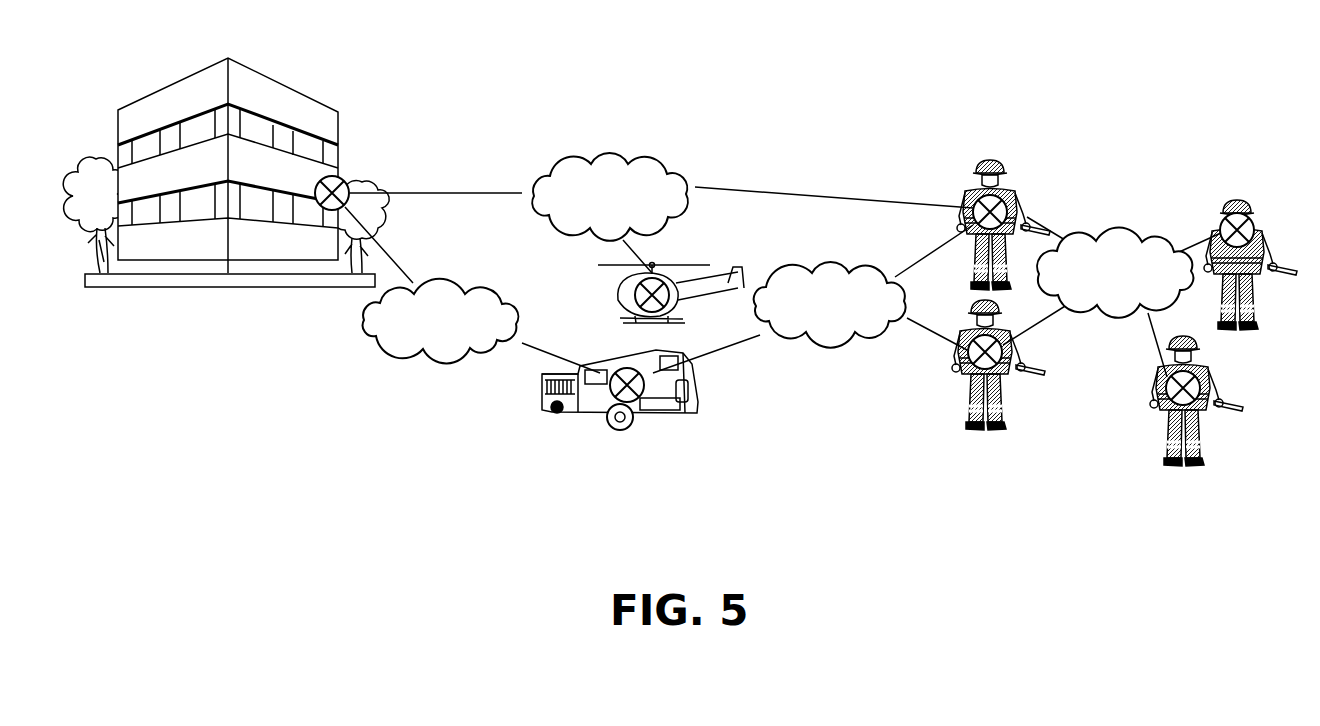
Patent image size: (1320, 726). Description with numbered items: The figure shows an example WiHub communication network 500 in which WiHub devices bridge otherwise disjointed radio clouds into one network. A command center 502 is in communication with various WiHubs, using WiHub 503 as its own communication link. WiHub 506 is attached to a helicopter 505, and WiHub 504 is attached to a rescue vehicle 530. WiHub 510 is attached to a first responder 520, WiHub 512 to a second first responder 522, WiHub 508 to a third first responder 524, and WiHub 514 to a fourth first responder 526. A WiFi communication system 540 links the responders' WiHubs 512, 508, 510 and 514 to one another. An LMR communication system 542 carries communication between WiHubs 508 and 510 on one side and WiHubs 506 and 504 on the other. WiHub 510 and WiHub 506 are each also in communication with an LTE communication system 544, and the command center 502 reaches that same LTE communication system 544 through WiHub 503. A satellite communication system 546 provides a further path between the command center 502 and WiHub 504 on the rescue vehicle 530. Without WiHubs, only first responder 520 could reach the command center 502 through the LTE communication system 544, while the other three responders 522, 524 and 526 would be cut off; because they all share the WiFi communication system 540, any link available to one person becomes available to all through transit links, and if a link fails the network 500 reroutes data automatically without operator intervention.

The WiHub communication network 500 is at (1205, 108).
The command center 502 is at (273, 105).
The WiHub 503 is at (350, 185).
The WiHub 504 is at (645, 390).
The helicopter 505 is at (617, 308).
The WiHub 506 is at (673, 293).
The WiHub 508 is at (1010, 350).
The WiHub 510 is at (1025, 208).
The WiHub 512 is at (1250, 225).
The WiHub 514 is at (1163, 388).
The first responder 520 is at (973, 237).
The second first responder 522 is at (1265, 303).
The third first responder 524 is at (968, 400).
The fourth first responder 526 is at (1207, 423).
The rescue vehicle 530 is at (593, 412).
The WiFi communication system 540 is at (1085, 317).
The LMR communication system 542 is at (798, 343).
The LTE communication system 544 is at (570, 190).
The satellite communication system 546 is at (418, 363).